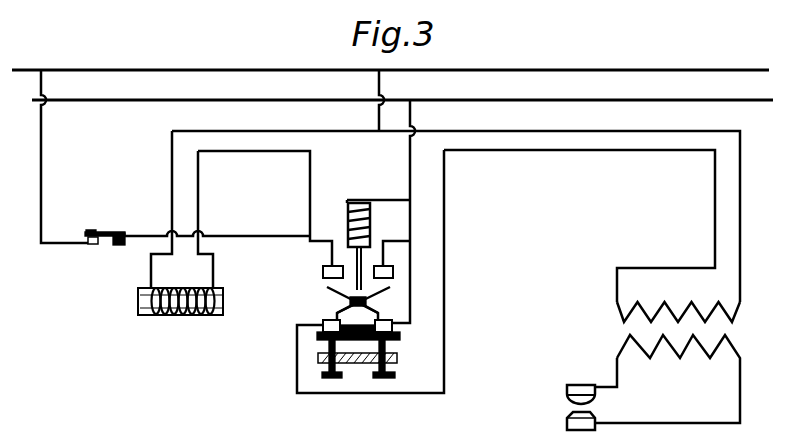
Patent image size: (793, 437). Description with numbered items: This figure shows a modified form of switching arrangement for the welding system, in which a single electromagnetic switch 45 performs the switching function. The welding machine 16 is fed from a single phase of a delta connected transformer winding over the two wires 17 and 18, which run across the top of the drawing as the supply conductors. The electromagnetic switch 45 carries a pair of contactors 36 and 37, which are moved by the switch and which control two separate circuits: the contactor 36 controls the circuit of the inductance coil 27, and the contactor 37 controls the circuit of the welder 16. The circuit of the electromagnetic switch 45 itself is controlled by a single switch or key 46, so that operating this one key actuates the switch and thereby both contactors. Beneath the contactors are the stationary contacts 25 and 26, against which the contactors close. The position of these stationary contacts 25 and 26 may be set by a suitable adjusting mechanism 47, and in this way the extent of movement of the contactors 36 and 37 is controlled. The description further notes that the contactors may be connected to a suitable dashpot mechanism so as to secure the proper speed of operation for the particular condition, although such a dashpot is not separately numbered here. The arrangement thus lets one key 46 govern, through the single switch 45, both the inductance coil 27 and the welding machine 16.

The wire 17 is at (133, 71).
The wire 18 is at (124, 101).
The electromagnetic switch 45 is at (357, 224).
The switch or key 46 is at (108, 232).
The inductance coil 27 is at (138, 301).
The contactor 36 is at (326, 290).
The contactor 37 is at (338, 318).
The stationary contact 26 is at (327, 328).
The stationary contact 25 is at (396, 335).
The adjusting mechanism 47 is at (318, 370).
The welding machine 16 is at (563, 401).